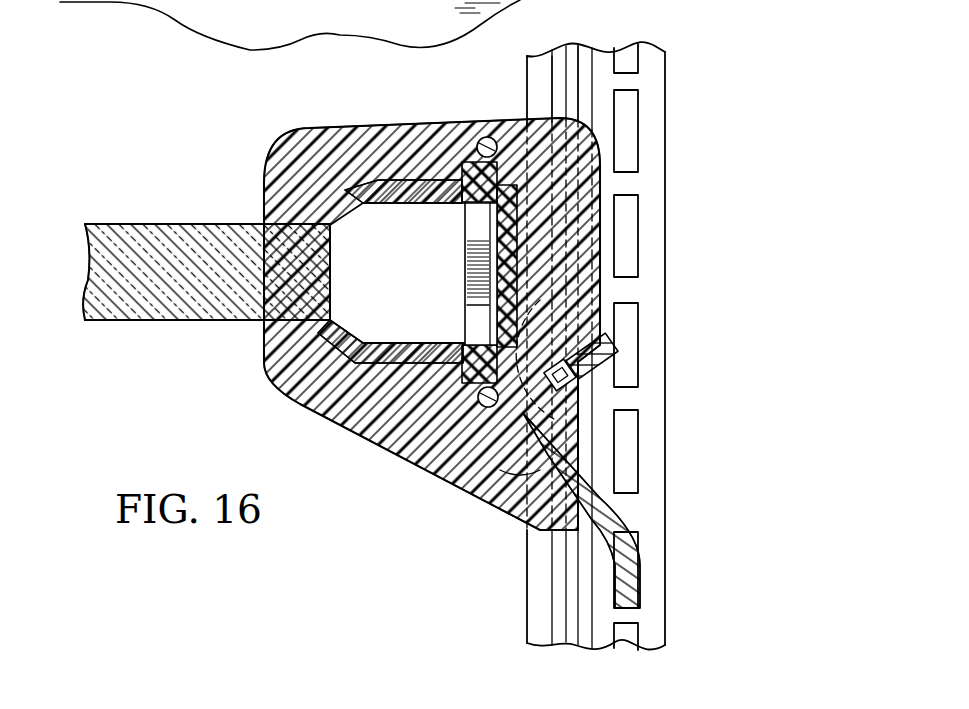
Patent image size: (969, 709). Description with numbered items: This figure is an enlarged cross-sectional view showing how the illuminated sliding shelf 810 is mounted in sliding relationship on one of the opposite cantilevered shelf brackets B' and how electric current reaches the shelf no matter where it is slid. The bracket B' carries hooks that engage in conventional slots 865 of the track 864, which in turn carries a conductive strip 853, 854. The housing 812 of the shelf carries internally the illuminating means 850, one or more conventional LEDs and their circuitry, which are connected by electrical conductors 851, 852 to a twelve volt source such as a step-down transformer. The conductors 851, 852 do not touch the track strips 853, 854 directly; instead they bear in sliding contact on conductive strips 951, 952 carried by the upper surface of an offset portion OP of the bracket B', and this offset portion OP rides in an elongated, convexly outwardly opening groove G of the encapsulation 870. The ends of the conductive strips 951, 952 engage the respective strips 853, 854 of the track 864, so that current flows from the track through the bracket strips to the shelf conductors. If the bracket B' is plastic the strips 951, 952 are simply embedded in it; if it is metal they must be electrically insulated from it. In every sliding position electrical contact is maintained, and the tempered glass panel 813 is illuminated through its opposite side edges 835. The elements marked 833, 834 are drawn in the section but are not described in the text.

The shelf 810 is at (171, 133).
The housing 812 is at (382, 175).
The tempered glass panel 813 is at (161, 335).
The support bar 833 is at (152, 242).
The support bar 834 is at (207, 272).
The side edge 835 is at (333, 248).
The illuminating means 850 is at (475, 222).
The electrical conductor 851 is at (500, 312).
The electrical conductor 852 is at (495, 236).
The conductive strip 853 is at (557, 94).
The conductive strip 854 is at (583, 57).
The track 864 is at (650, 224).
The slots 865 is at (628, 138).
The encapsulation 870 is at (395, 448).
The conductive strip 951 is at (572, 390).
The conductive strip 952 is at (612, 368).
The groove G is at (562, 418).
The offset portion OP is at (538, 467).
The shelf bracket B' is at (677, 570).